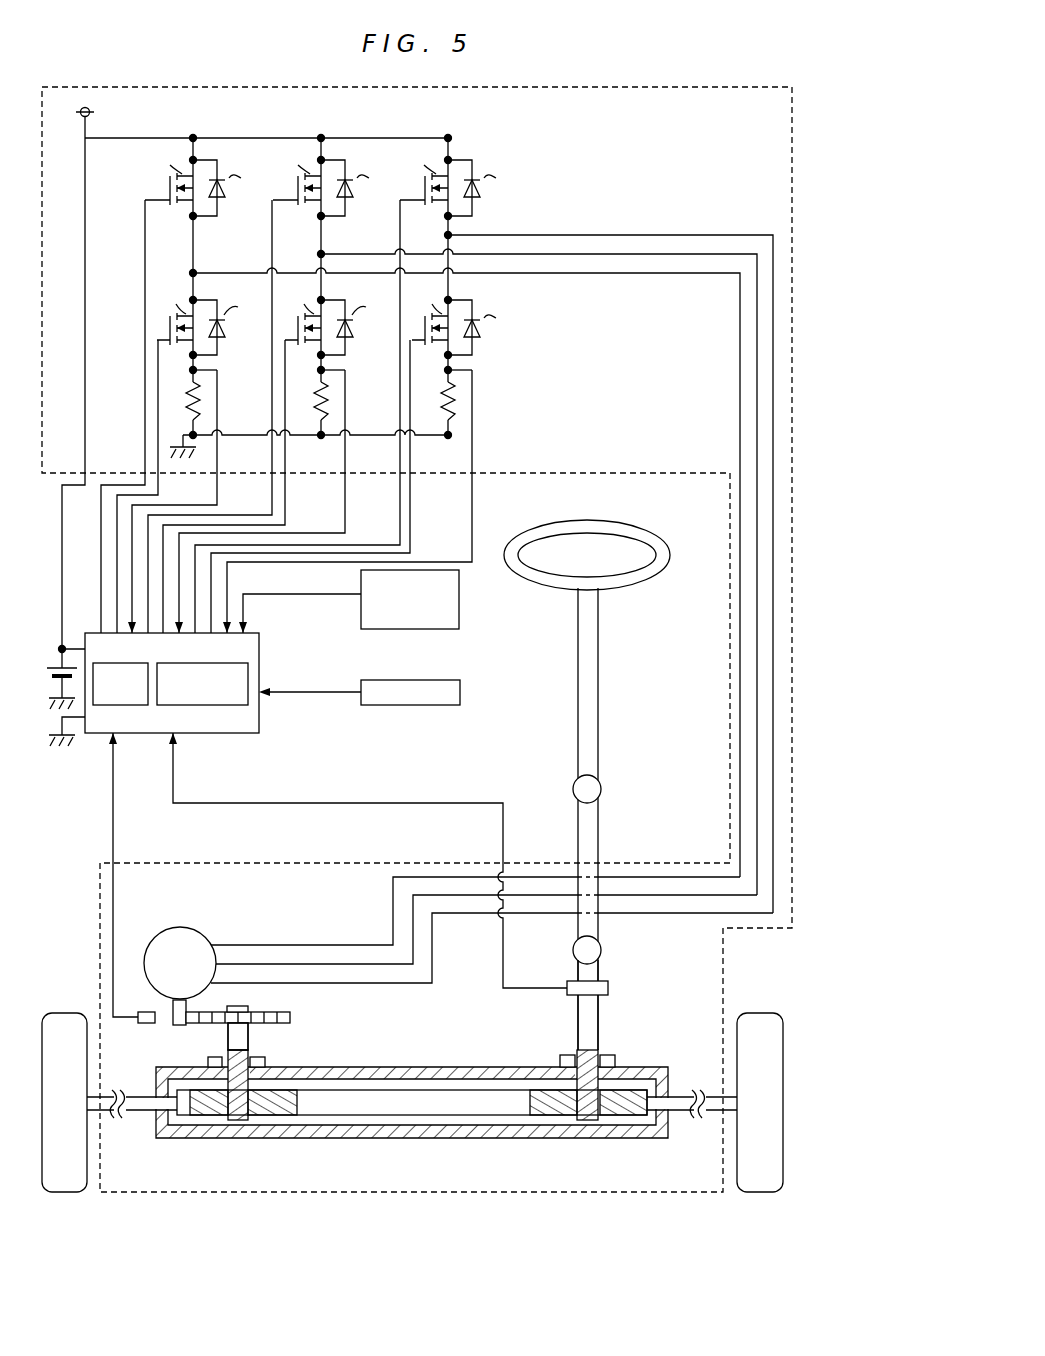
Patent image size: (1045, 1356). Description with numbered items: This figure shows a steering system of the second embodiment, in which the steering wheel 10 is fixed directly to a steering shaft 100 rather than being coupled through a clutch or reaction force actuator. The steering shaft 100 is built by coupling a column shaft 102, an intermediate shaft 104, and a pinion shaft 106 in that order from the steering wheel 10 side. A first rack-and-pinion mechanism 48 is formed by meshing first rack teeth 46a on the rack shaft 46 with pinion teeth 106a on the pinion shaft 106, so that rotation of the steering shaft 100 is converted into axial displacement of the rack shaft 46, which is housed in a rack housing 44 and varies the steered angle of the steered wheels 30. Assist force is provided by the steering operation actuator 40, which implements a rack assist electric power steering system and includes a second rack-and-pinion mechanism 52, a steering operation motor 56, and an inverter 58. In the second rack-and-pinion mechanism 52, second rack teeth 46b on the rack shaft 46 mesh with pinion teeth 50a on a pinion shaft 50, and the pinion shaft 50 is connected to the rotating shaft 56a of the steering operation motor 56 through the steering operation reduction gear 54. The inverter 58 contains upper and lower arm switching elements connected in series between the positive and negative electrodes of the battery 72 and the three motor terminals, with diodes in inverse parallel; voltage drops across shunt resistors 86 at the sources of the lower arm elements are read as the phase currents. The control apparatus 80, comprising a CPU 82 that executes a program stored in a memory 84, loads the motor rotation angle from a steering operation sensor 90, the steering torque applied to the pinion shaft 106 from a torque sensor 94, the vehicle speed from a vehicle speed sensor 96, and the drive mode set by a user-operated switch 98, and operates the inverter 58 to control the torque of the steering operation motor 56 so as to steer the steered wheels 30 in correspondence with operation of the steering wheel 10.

The steering wheel 10 is at (671, 548).
The steered wheels 30 is at (62, 1012).
The steering operation actuator 40 is at (656, 88).
The rack housing 44 is at (660, 1066).
The rack shaft 46 is at (412, 1137).
The first rack teeth 46a is at (620, 1112).
The second rack teeth 46b is at (297, 1112).
The first rack-and-pinion mechanism 48 is at (584, 1150).
The pinion shaft 50 is at (247, 1042).
The pinion teeth 50a is at (250, 1045).
The second rack-and-pinion mechanism 52 is at (244, 1150).
The steering operation reduction gear 54 is at (270, 1012).
The steering operation motor 56 is at (188, 929).
The rotating shaft 56a is at (182, 1028).
The inverter 58 is at (400, 133).
The battery 72 is at (62, 658).
The control apparatus 80 is at (196, 683).
The central processing unit 82 is at (108, 663).
The memory 84 is at (195, 663).
The shunt resistors 86 is at (184, 397).
The steering operation sensor 90 is at (143, 1026).
The torque sensor 94 is at (609, 988).
The vehicle speed sensor 96 is at (460, 595).
The switch 98 is at (461, 694).
The steering shaft 100 is at (648, 819).
The column shaft 102 is at (598, 752).
The intermediate shaft 104 is at (598, 840).
The pinion shaft 106 is at (598, 968).
The pinion teeth 106a is at (600, 1052).